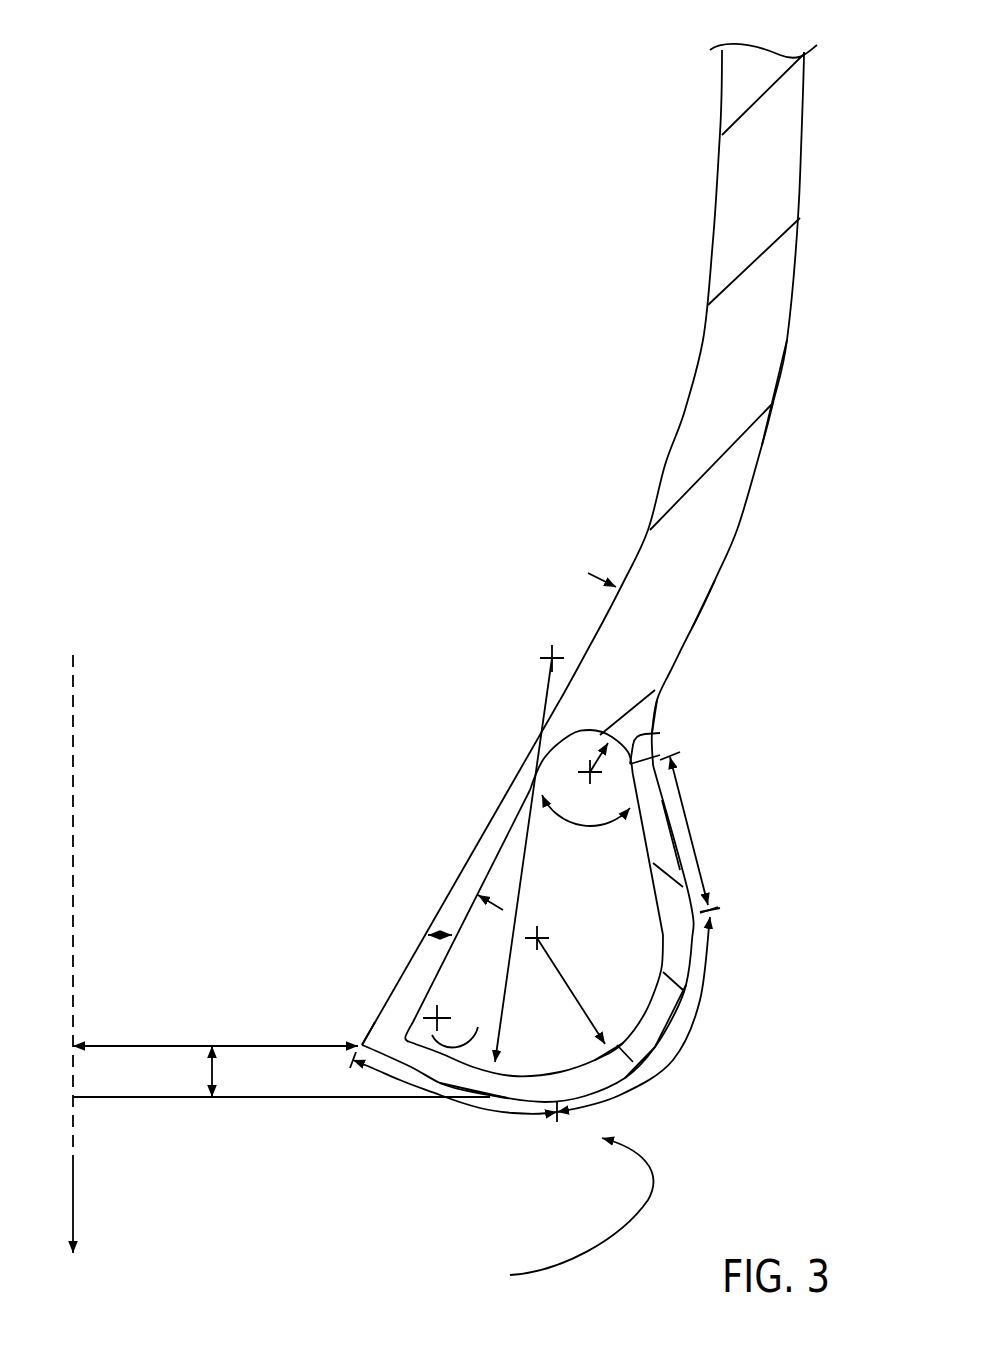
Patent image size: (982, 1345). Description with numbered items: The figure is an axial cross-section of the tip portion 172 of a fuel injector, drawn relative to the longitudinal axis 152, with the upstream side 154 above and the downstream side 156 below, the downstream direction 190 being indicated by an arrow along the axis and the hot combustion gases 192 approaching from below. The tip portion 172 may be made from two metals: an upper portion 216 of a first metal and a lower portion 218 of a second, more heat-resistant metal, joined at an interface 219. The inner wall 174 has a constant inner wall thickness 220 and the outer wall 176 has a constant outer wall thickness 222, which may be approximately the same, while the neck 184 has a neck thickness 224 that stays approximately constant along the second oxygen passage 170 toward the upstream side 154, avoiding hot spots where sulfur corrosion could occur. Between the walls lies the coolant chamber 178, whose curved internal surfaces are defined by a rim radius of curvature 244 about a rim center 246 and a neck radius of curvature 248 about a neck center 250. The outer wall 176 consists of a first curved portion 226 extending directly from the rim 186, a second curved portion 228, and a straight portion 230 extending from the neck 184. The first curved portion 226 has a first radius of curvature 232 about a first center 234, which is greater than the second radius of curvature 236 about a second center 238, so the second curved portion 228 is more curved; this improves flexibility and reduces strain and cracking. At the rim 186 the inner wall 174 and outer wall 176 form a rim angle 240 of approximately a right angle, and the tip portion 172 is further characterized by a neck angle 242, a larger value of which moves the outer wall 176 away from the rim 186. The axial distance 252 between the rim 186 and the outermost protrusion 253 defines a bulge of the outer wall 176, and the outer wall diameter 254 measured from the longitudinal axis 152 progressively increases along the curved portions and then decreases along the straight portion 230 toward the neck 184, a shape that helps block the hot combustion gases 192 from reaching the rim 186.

The longitudinal axis 152 is at (75, 706).
The upstream side 154 is at (476, 152).
The downstream side 156 is at (320, 1212).
The second oxygen passage 170 is at (805, 157).
The tip portion 172 is at (686, 53).
The inner wall 174 is at (496, 808).
The outer wall 176 is at (627, 1050).
The coolant chamber 178 is at (596, 970).
The neck 184 is at (667, 705).
The rim 186 is at (356, 1032).
The downstream direction 190 is at (74, 1212).
The hot combustion gases 192 is at (658, 1190).
The upper portion 216 is at (765, 444).
The lower portion 218 is at (657, 1016).
The interface 219 is at (652, 736).
The inner wall thickness 220 is at (452, 880).
The outer wall thickness 222 is at (682, 855).
The neck thickness 224 is at (696, 630).
The first curved portion 226 is at (473, 1095).
The second curved portion 228 is at (620, 1096).
The straight portion 230 is at (685, 812).
The first radius of curvature 232 is at (522, 868).
The first center 234 is at (550, 655).
The second radius of curvature 236 is at (570, 990).
The second center 238 is at (542, 936).
The rim angle 240 is at (389, 1054).
The neck angle 242 is at (596, 824).
The rim radius of curvature 244 is at (408, 1030).
The rim center 246 is at (457, 1022).
The neck radius of curvature 248 is at (580, 757).
The neck center 250 is at (584, 769).
The axial distance 252 is at (210, 1070).
The outermost protrusion 253 is at (513, 1114).
The outer wall diameter 254 is at (200, 1045).